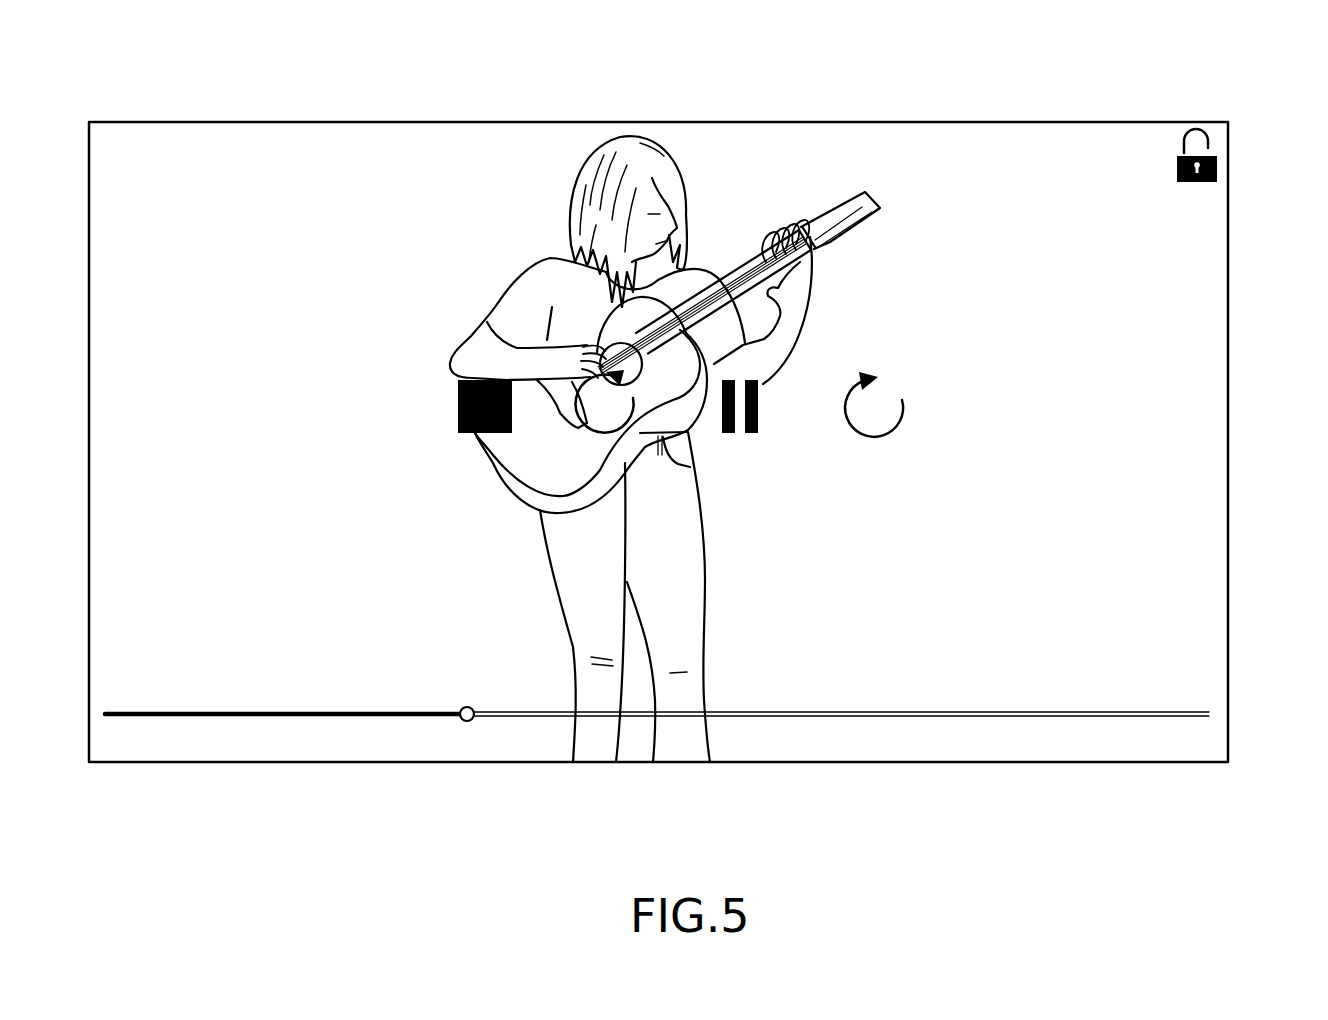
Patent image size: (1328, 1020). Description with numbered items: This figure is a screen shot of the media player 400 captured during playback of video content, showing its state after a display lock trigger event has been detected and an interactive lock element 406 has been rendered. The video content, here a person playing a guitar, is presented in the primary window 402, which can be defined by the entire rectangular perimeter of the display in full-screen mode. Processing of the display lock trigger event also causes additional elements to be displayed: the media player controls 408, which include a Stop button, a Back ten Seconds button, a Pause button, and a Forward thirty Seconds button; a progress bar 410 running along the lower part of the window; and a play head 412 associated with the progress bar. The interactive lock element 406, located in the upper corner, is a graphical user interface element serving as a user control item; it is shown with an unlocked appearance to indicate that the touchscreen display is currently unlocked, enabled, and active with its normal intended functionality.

The media player 400 is at (225, 76).
The primary window 402 is at (897, 122).
The interactive lock element 406 is at (1215, 192).
The media player controls 408 is at (790, 474).
The progress bar 410 is at (1013, 716).
The play head 412 is at (474, 720).